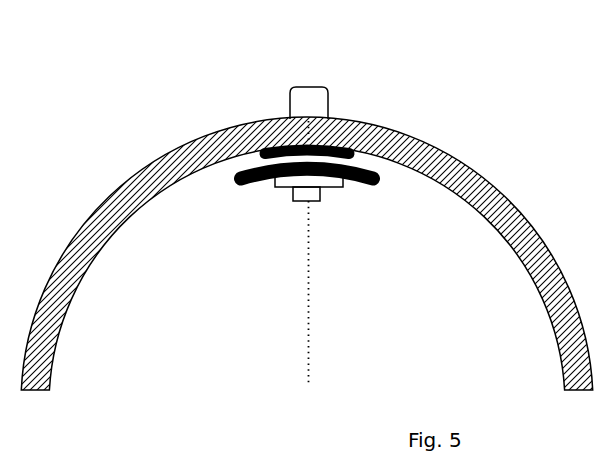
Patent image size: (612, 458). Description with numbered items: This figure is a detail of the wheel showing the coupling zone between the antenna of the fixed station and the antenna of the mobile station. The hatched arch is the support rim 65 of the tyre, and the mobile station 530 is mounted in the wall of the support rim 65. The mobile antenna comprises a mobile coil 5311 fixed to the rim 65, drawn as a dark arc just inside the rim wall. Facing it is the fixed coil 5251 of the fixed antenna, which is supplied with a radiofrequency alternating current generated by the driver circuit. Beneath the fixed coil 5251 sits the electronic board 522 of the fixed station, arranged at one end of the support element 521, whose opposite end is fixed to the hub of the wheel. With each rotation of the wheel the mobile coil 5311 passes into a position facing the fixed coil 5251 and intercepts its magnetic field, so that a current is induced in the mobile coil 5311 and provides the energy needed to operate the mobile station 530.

The support rim 65 is at (148, 187).
The mobile station 530 is at (312, 102).
The mobile coil 5311 is at (352, 148).
The fixed coil 5251 is at (238, 187).
The electronic board 522 is at (335, 180).
The support element 521 is at (308, 192).